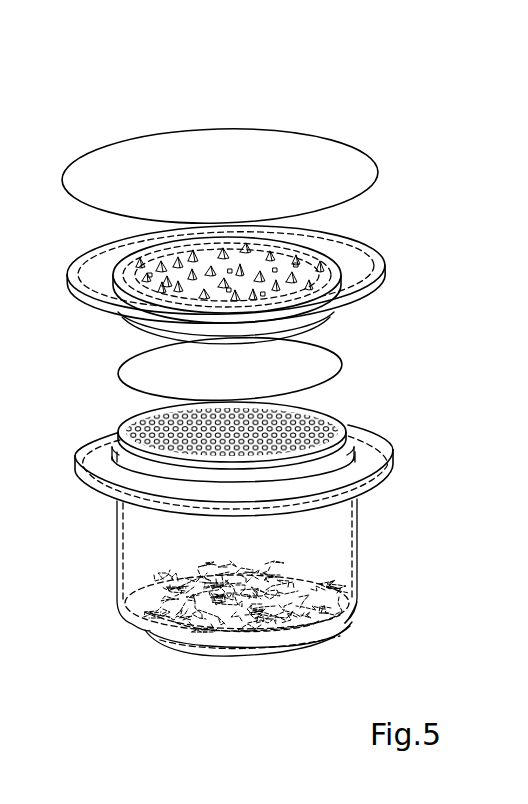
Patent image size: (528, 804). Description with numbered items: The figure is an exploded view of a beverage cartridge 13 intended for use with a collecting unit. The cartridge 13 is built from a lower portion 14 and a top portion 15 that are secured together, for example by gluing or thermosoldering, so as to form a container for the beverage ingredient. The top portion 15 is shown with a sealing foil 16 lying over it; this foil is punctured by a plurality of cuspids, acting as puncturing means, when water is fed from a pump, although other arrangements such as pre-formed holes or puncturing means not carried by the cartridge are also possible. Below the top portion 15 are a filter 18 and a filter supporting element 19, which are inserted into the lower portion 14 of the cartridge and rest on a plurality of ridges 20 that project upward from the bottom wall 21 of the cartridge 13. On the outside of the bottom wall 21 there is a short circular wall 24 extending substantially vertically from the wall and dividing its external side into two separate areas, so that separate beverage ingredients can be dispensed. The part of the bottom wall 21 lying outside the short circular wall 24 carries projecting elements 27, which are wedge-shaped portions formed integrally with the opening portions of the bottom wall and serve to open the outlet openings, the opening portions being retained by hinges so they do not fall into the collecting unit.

The cartridge 13 is at (368, 110).
The lower portion 14 is at (343, 528).
The top portion 15 is at (365, 277).
The sealing foil 16 is at (352, 182).
The filter 18 is at (328, 366).
The filter supporting element 19 is at (346, 418).
The ridges 20 is at (337, 566).
The bottom wall 21 is at (358, 634).
The short circular wall 24 is at (185, 645).
The projecting elements 27 is at (257, 645).